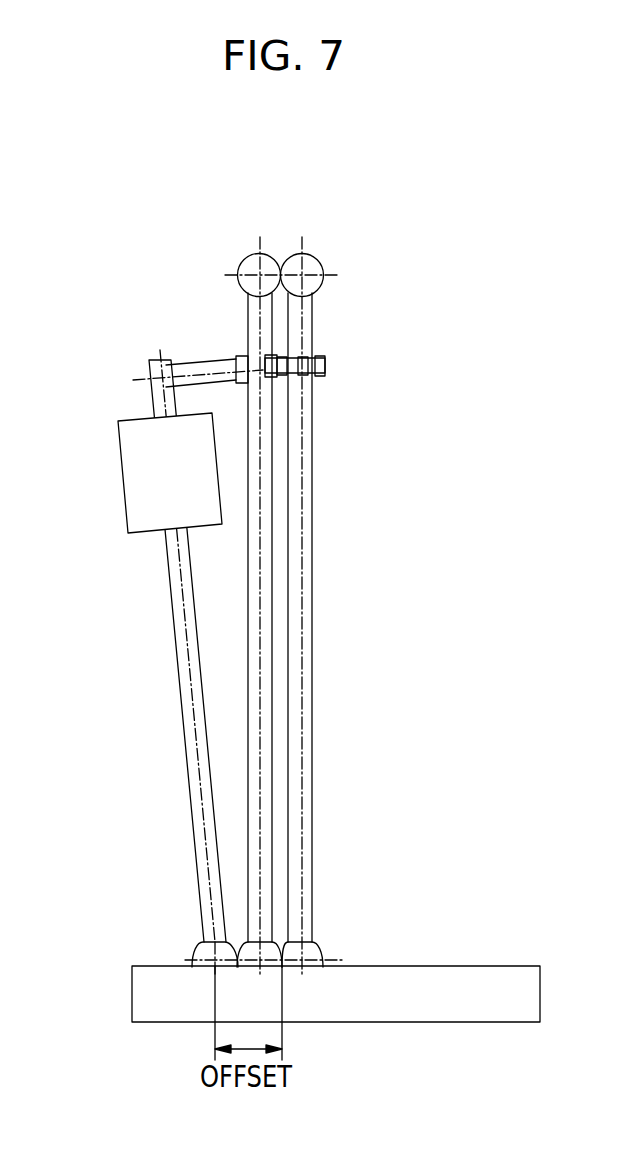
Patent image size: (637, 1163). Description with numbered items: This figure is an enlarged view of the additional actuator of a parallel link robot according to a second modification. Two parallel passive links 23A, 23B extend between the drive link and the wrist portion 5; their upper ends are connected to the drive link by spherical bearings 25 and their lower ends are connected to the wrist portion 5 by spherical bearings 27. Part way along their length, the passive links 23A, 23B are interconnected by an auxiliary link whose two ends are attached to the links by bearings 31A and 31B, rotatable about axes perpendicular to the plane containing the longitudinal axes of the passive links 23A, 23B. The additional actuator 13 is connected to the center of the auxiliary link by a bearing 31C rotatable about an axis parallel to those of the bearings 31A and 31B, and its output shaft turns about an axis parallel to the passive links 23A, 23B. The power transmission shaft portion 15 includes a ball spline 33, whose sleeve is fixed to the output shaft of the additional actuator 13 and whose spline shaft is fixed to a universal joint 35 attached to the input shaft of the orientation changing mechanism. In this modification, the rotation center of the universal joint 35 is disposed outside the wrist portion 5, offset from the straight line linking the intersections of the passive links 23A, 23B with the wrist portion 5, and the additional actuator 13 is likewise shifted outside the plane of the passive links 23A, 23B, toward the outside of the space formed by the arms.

The wrist portion 5 is at (132, 993).
The additional actuator 13 is at (122, 482).
The power transmission shaft portion 15 is at (138, 623).
The passive link 23A is at (272, 594).
The passive link 23B is at (312, 518).
The spherical bearing 25 is at (243, 262).
The spherical bearing 27 is at (278, 942).
The bearing 31A is at (282, 372).
The bearing 31B is at (325, 365).
The bearing 31C is at (303, 353).
The ball spline 33 is at (183, 725).
The universal joint 35 is at (193, 950).